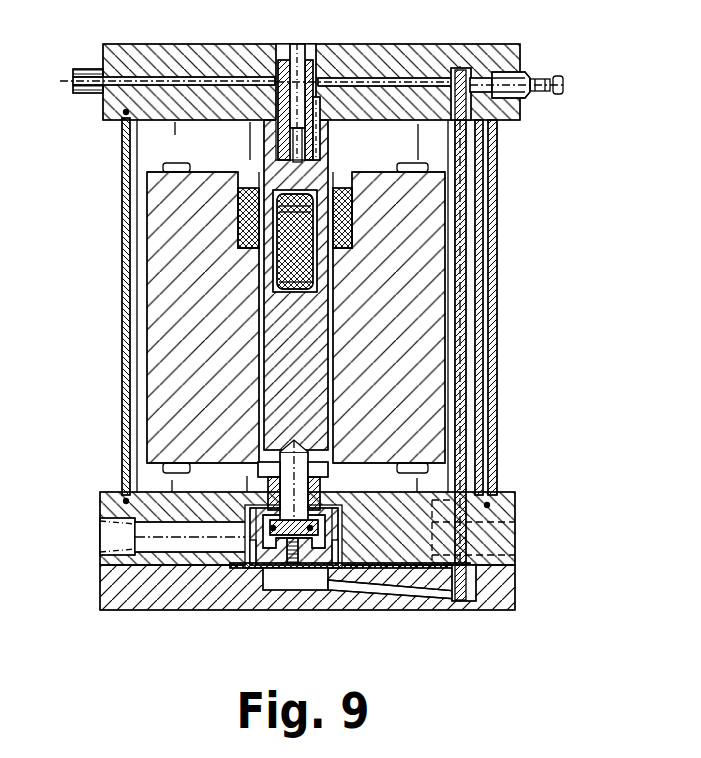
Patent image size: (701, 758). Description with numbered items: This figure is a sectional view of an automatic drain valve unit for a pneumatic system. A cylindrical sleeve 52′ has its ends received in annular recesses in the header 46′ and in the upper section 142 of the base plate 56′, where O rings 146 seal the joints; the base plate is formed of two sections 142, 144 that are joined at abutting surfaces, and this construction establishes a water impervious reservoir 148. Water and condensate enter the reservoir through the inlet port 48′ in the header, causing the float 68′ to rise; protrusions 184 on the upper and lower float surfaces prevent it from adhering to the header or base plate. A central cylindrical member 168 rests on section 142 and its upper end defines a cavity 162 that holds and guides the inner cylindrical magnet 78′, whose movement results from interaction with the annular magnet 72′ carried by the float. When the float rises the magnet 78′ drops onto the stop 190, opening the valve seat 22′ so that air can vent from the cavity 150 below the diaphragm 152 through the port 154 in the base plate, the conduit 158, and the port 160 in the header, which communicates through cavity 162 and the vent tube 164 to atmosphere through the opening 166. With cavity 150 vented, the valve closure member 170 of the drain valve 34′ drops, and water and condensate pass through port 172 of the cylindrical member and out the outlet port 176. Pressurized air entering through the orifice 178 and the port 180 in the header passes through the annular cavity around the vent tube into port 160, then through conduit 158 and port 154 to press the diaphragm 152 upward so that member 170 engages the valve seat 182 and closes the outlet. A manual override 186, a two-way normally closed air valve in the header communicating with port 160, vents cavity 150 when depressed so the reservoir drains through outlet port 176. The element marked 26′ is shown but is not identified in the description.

The port 180 is at (170, 74).
The opening 166 is at (292, 45).
The vent tube 164 is at (299, 46).
The port 160 is at (363, 80).
The header 46′ is at (392, 55).
The inlet port 48′ is at (516, 66).
The manual override 186 is at (534, 106).
The O rings 146 is at (493, 112).
The orifice 178 is at (72, 85).
The reservoir 148 is at (148, 143).
The valve seat 22′ is at (288, 158).
The cavity 162 is at (315, 133).
The protrusions 184 is at (418, 166).
The annular magnet 72′ is at (342, 188).
The inner cylindrical magnet 78′ is at (297, 194).
The valve element 26′ is at (303, 256).
The stop 190 is at (310, 292).
The cylindrical member 168 is at (312, 355).
The conduit 158 is at (481, 250).
The cylindrical sleeve 52′ is at (496, 377).
The base plate 56′ is at (86, 480).
The outlet port 176 is at (103, 538).
The port 172 is at (260, 468).
The valve closure member 170 is at (265, 542).
The valve seat 182 is at (320, 496).
The float 68′ is at (406, 480).
The drain valve 34′ is at (325, 530).
The base plate section 142 is at (508, 503).
The cavity 150 is at (305, 583).
The diaphragm 152 is at (328, 583).
The port 154 is at (427, 594).
The base plate section 144 is at (505, 611).